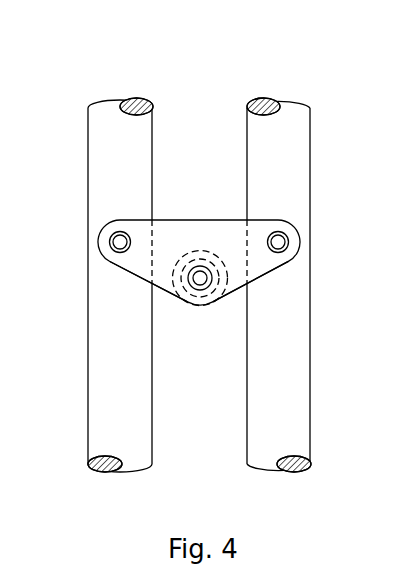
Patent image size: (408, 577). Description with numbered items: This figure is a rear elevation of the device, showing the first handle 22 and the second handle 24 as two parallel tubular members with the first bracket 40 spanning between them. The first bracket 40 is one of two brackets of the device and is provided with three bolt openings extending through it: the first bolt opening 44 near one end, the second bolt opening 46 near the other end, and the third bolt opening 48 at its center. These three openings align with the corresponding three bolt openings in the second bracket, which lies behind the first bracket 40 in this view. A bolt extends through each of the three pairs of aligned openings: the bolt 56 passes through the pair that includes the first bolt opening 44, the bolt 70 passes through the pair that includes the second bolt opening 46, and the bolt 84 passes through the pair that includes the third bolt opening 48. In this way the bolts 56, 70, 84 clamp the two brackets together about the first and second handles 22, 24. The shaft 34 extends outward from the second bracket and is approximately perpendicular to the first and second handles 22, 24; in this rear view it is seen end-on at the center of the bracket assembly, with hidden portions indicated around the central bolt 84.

The first handle 22 is at (88, 147).
The second handle 24 is at (310, 150).
The first bracket 40 is at (227, 228).
The first bolt opening 44 is at (114, 226).
The bolt 70 is at (296, 253).
The bolt 56 is at (112, 262).
The second bolt opening 46 is at (283, 254).
The third bolt opening 48 is at (200, 278).
The bolt 84 is at (201, 266).
The shaft 34 is at (214, 307).